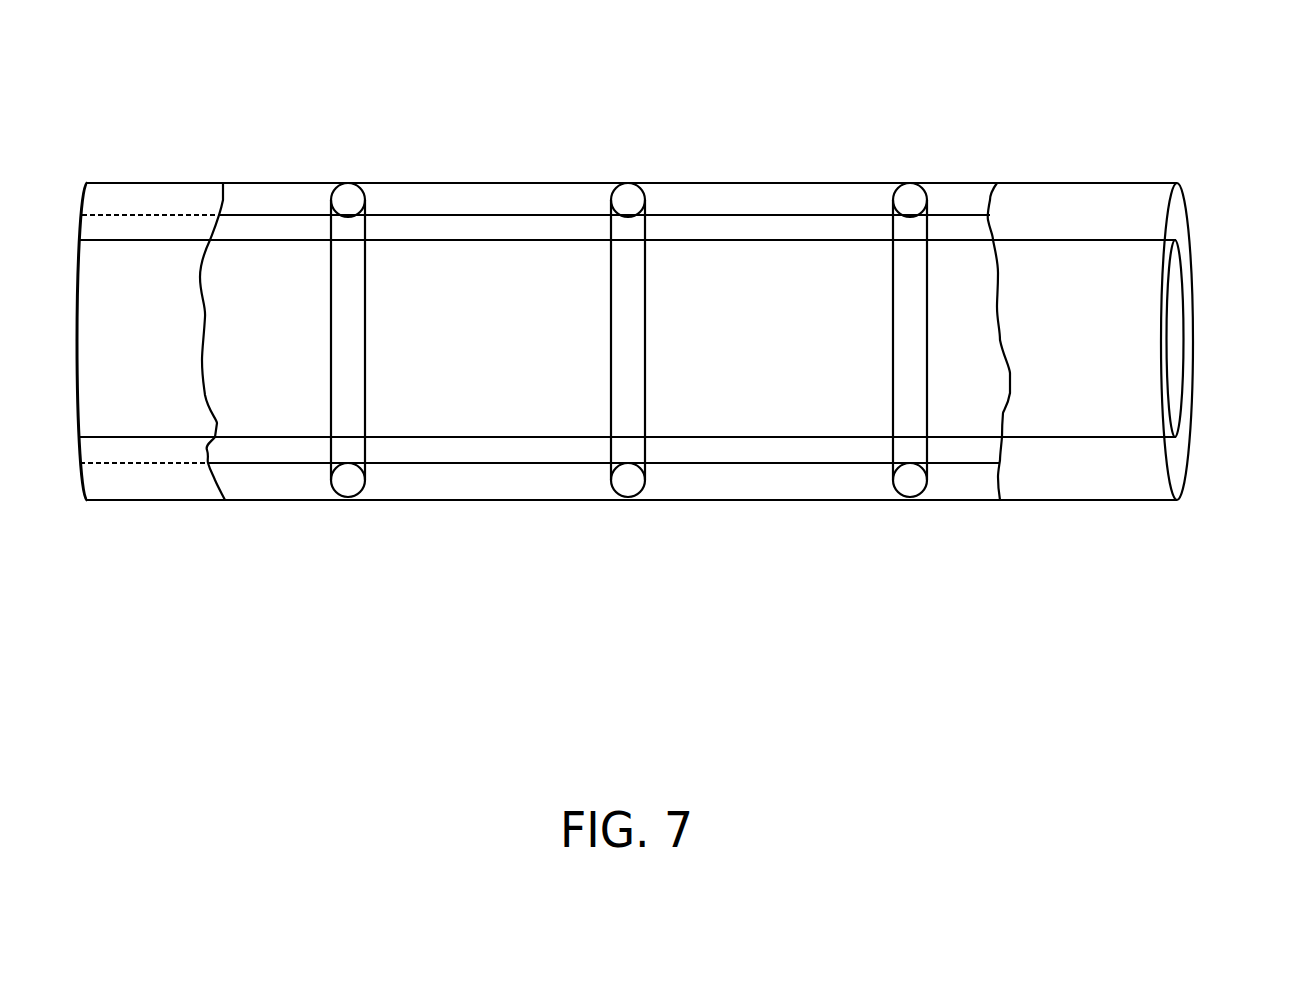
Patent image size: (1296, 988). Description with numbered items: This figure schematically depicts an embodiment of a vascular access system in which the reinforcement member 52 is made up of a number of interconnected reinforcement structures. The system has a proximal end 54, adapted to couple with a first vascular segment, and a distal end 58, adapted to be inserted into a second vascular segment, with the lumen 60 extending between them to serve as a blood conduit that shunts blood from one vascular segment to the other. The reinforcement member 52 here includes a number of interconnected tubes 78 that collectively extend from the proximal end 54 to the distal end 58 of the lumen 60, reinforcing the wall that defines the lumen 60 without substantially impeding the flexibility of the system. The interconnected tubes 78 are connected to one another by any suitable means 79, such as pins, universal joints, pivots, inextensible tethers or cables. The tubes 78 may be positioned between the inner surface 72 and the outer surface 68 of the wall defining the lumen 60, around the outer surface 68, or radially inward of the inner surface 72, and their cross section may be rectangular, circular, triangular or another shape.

The reinforcement member 52 is at (728, 68).
The proximal end 54 is at (109, 125).
The distal end 58 is at (1180, 125).
The lumen 60 is at (1217, 277).
The outer surface 68 is at (287, 182).
The inner surface 72 is at (165, 215).
The interconnected tubes 78 is at (738, 230).
The connecting means 79 is at (630, 193).